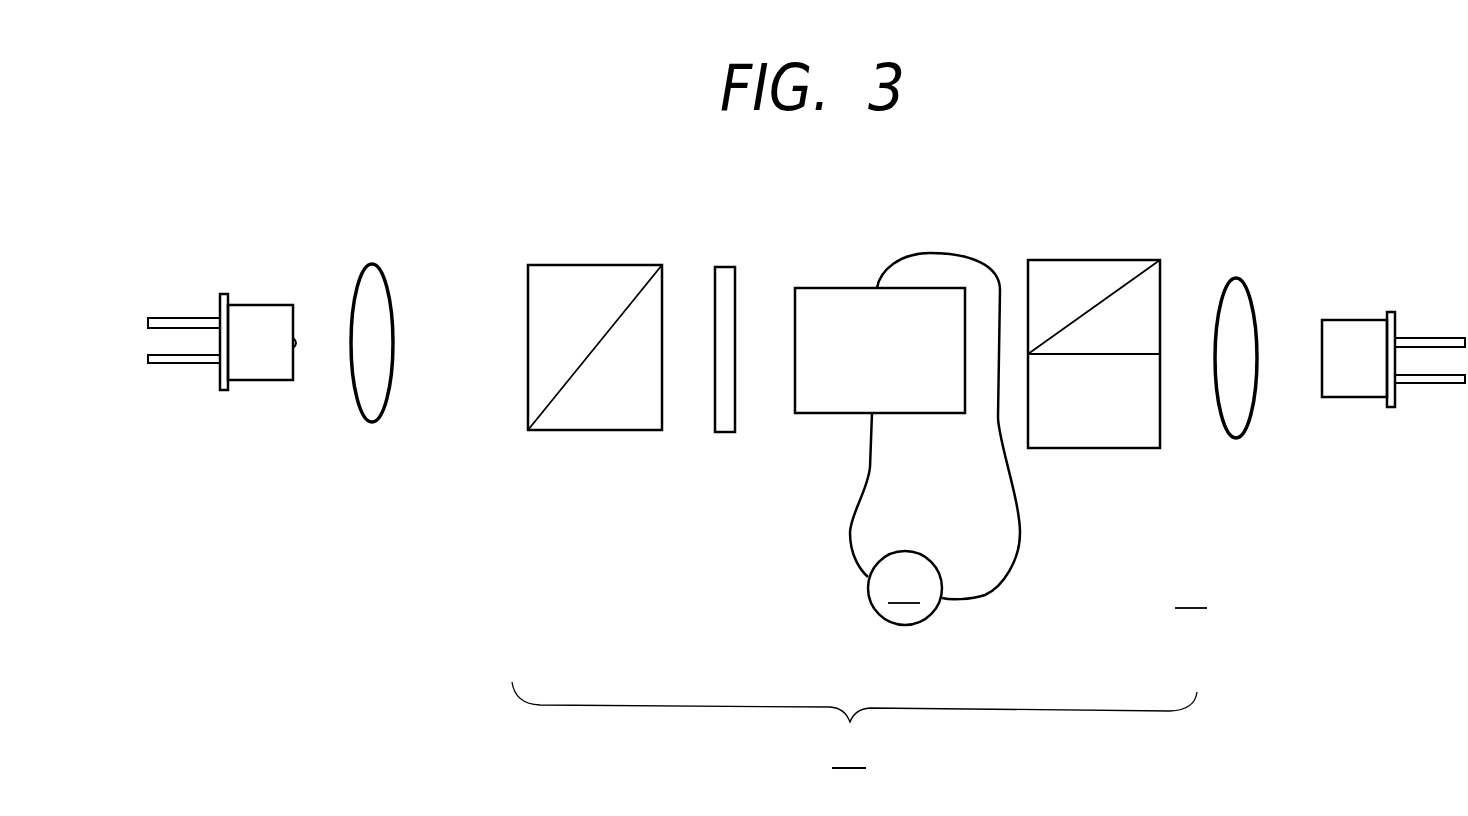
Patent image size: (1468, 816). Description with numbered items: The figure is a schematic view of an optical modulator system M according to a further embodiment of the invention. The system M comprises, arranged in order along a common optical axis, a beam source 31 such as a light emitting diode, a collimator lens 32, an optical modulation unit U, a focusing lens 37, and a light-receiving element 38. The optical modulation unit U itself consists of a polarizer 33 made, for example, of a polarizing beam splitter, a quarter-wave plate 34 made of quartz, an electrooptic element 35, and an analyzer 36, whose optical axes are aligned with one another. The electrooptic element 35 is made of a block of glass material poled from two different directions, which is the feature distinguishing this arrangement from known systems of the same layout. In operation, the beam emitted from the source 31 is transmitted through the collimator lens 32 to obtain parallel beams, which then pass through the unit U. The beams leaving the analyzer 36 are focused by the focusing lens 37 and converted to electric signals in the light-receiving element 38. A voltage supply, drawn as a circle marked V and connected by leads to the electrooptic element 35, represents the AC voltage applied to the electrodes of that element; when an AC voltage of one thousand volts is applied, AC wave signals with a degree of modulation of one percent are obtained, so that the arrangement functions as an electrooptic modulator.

The beam source 31 is at (267, 303).
The collimator lens 32 is at (380, 265).
The polarizer 33 is at (628, 263).
The λ/4 plate 34 is at (730, 263).
The electrooptic element 35 is at (838, 288).
The analyzer 36 is at (1128, 260).
The focusing lens 37 is at (1242, 278).
The light-receiving element 38 is at (1362, 320).
The voltage source (voltmeter) V is at (935, 439).
The optical modulation unit U is at (854, 725).
The optical modulator system M is at (1191, 591).